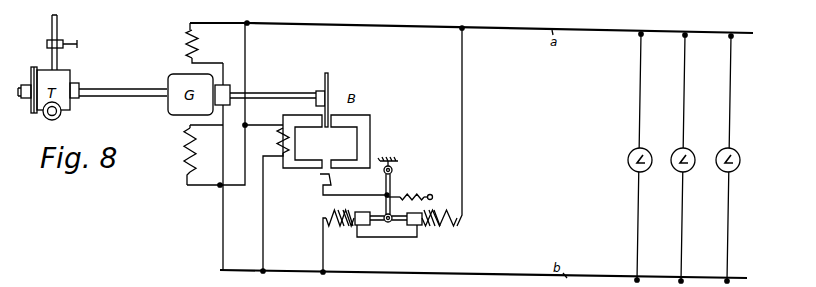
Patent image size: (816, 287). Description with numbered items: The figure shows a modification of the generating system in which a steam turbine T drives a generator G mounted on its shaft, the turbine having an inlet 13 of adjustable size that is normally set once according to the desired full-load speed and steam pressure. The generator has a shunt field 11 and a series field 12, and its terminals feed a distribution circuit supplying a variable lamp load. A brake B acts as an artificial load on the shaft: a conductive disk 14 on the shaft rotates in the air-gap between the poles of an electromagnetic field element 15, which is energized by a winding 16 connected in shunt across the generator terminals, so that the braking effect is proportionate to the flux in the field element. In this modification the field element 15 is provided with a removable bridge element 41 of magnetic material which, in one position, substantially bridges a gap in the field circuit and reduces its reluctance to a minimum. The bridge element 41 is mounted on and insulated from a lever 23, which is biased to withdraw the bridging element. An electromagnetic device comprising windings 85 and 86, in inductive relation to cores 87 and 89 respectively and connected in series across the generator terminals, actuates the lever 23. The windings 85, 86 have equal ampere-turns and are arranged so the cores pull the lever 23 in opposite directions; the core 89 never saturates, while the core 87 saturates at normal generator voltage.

The shunt field 11 is at (176, 155).
The series field 12 is at (184, 52).
The inlet 13 is at (58, 39).
The disk 14 is at (329, 90).
The field element 15 is at (326, 141).
The winding 16 is at (274, 200).
The lever 23 is at (391, 177).
The bridge element 41 is at (318, 180).
The winding 85 is at (433, 228).
The winding 86 is at (327, 239).
The core 87 is at (442, 212).
The core 89 is at (357, 226).